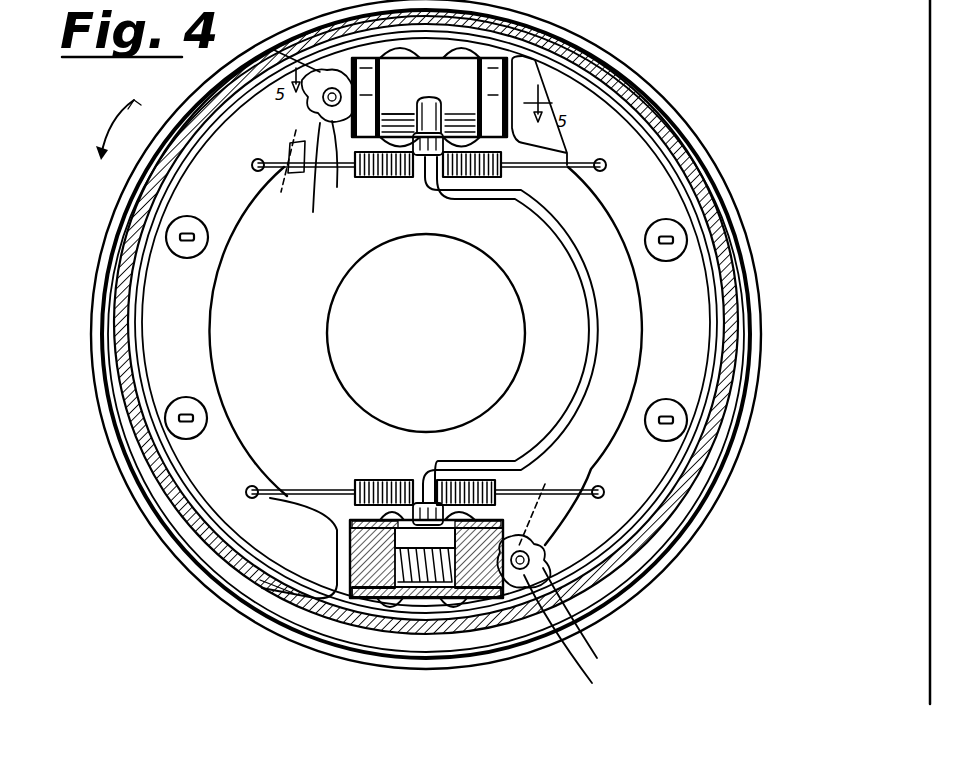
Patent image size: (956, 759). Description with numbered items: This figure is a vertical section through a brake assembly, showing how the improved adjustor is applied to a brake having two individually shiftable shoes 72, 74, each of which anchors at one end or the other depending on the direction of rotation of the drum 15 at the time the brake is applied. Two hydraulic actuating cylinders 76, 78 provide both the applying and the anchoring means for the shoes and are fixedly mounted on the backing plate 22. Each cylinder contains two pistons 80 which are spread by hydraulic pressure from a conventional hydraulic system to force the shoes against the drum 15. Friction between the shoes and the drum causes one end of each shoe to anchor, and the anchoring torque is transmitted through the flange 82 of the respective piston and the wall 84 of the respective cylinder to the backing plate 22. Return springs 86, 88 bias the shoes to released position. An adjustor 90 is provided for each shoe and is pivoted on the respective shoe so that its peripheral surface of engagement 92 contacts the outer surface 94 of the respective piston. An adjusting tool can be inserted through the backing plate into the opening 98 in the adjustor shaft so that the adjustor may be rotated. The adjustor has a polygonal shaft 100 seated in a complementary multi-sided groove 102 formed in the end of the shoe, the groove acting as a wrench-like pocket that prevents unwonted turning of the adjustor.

The drum 15 is at (743, 327).
The backing plate 22 is at (622, 363).
The shoe 72 is at (693, 287).
The shoe 74 is at (160, 383).
The hydraulic actuating cylinder 76 is at (489, 347).
The hydraulic actuating cylinder 78 is at (415, 418).
The pistons 80 is at (350, 574).
The flange 82 is at (355, 575).
The wall 84 is at (348, 545).
The return spring 86 is at (385, 182).
The return spring 88 is at (363, 480).
The adjustor 90 is at (462, 398).
The peripheral surface of engagement 92 is at (303, 108).
The outer surface 94 is at (378, 78).
The opening 98 is at (474, 412).
The polygonal shaft 100 is at (419, 339).
The multi-sided groove 102 is at (497, 465).